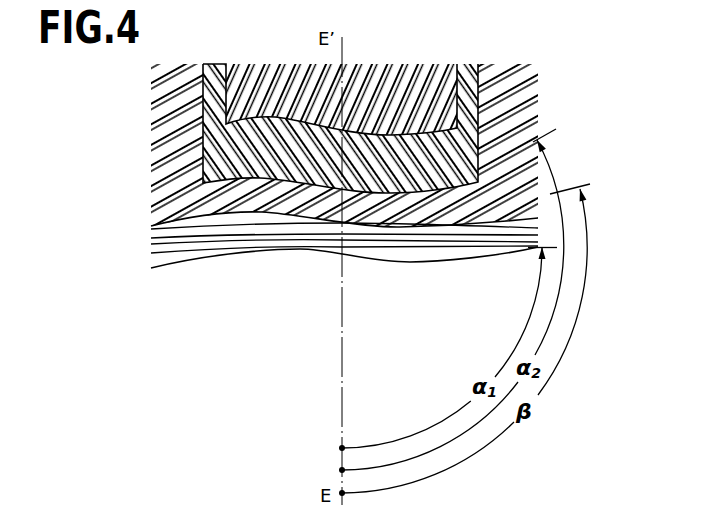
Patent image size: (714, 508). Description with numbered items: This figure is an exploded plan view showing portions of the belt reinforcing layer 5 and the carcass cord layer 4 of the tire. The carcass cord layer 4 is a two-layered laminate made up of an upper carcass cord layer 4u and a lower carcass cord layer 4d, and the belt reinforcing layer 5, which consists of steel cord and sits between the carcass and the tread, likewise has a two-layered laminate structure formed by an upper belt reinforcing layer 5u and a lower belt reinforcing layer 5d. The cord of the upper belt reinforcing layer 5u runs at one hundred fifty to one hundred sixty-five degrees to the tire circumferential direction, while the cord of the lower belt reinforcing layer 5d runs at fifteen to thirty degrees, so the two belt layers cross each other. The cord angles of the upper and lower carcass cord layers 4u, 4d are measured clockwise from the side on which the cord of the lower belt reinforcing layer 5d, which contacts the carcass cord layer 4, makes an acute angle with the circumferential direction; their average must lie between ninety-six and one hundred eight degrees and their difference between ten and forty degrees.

The carcass cord layer 4 is at (148, 171).
The upper carcass cord layer 4u is at (149, 114).
The lower carcass cord layer 4d is at (150, 240).
The belt reinforcing layer 5 is at (482, 90).
The upper belt reinforcing layer 5u is at (275, 66).
The lower belt reinforcing layer 5d is at (216, 68).